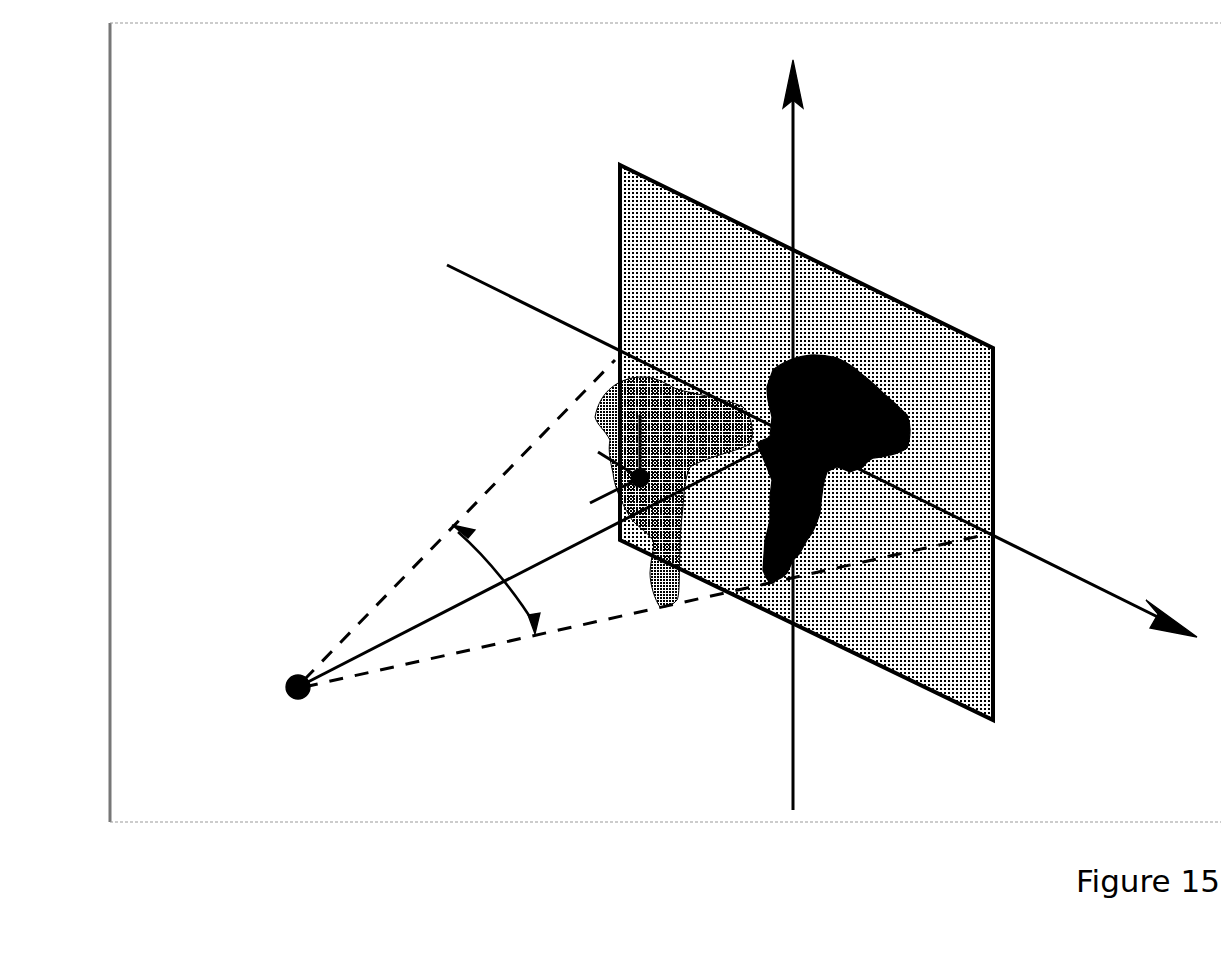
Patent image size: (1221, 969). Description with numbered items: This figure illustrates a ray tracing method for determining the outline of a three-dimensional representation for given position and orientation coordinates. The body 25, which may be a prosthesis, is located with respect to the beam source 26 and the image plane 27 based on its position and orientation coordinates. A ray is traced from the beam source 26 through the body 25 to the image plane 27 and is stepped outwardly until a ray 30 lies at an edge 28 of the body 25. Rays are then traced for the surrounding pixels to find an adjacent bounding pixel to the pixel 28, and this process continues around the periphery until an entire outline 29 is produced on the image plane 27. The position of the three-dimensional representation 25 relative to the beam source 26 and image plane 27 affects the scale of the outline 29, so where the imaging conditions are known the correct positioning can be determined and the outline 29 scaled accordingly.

The body 25 is at (612, 403).
The beam source 26 is at (292, 676).
The image plane 27 is at (685, 258).
The edge of body 28 is at (798, 342).
The outline 29 is at (839, 334).
The ray 30 is at (443, 617).